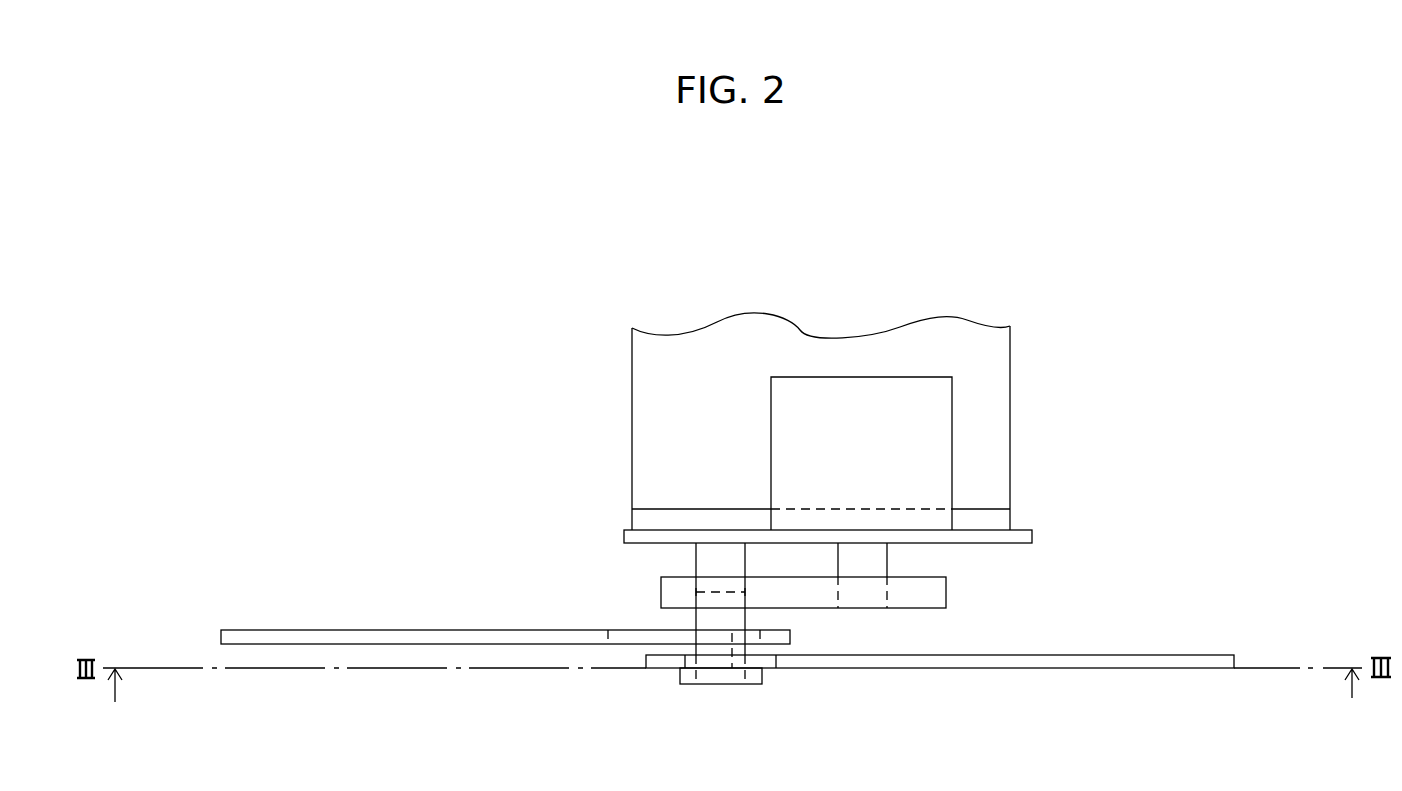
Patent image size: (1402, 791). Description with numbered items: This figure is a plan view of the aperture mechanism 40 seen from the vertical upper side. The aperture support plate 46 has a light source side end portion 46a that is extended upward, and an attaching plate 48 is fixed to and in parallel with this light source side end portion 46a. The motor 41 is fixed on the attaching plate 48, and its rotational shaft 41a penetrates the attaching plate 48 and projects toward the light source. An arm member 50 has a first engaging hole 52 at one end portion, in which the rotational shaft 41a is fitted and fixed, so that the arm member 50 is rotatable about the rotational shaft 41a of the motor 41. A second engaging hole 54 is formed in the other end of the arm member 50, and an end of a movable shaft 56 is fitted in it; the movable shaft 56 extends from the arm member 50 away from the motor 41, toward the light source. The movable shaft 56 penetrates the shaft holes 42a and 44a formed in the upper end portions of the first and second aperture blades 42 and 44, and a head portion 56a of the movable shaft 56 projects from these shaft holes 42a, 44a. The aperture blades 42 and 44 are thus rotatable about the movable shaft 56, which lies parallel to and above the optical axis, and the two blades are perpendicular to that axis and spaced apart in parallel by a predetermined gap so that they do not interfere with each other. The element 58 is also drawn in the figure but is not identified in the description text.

The aperture mechanism 40 is at (499, 519).
The motor 41 is at (898, 443).
The rotational shaft 41a is at (865, 560).
The first aperture blade 42 is at (1177, 657).
The shaft hole 42a is at (707, 660).
The second aperture blade 44 is at (298, 636).
The shaft hole 44a is at (732, 668).
The aperture support plate 46 is at (983, 370).
The light source side end portion 46a is at (648, 520).
The attaching plate 48 is at (1015, 537).
The arm member 50 is at (658, 590).
The first engaging hole 52 is at (887, 592).
The second engaging hole 54 is at (703, 590).
The movable shaft 56 is at (718, 620).
The head portion 56a is at (718, 677).
The spacer pin 58 is at (718, 556).